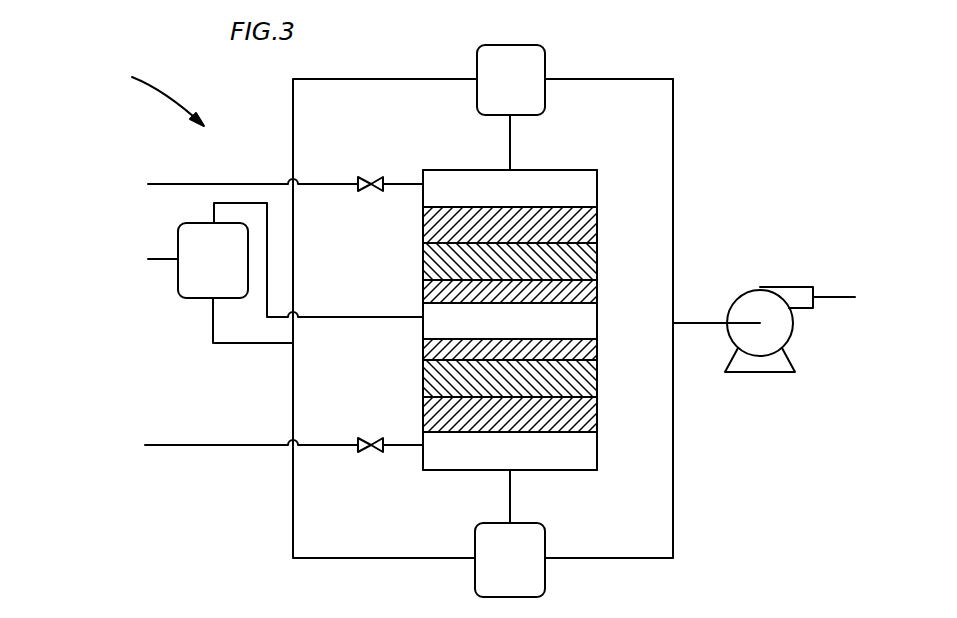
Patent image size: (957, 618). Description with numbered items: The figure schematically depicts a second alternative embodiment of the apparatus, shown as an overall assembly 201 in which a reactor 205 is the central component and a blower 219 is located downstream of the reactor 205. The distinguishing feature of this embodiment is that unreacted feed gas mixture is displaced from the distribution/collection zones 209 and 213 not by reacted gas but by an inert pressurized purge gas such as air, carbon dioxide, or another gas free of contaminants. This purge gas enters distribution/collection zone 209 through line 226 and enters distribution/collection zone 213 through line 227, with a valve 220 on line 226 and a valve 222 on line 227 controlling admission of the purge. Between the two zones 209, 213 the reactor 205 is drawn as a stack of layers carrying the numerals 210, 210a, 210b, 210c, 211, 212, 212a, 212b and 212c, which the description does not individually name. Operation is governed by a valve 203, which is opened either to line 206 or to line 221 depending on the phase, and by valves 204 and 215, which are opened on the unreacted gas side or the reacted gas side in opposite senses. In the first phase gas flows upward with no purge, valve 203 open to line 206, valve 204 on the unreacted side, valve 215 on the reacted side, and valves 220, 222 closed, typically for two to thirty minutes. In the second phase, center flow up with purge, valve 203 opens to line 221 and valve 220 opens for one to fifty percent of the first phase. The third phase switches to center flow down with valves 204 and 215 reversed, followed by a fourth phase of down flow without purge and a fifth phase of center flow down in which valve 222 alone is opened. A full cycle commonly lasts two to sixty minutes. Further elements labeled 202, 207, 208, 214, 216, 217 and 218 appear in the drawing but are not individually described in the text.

The processing apparatus 201 is at (141, 93).
The gas supply line 202 is at (160, 260).
The valve 203 is at (192, 222).
The valve 204 is at (545, 552).
The reactor 205 is at (467, 168).
The line 206 is at (248, 345).
The housing 207 is at (293, 145).
The lower lead 208 is at (513, 493).
The distribution/collection zone 209 is at (588, 450).
The lower electrode assembly 210 is at (489, 376).
The lower catalyst layer 210a is at (423, 418).
The lower electrolyte layer 210b is at (423, 380).
The lower catalyst layer 210c is at (423, 345).
The separator plate 211 is at (587, 322).
The upper electrode assembly 212 is at (488, 261).
The upper catalyst layer 212a is at (423, 218).
The upper electrolyte layer 212b is at (423, 267).
The upper catalyst layer 212c is at (423, 297).
The distribution/collection zone 213 is at (590, 190).
The upper lead 214 is at (512, 135).
The valve 215 is at (547, 68).
The housing wall 216 is at (673, 198).
The outlet pipe 217 is at (698, 325).
The pump discharge pipe 218 is at (835, 298).
The blower 219 is at (767, 287).
The valve 220 is at (368, 457).
The line 221 is at (243, 203).
The valve 222 is at (376, 179).
The line 226 is at (207, 447).
The line 227 is at (215, 183).